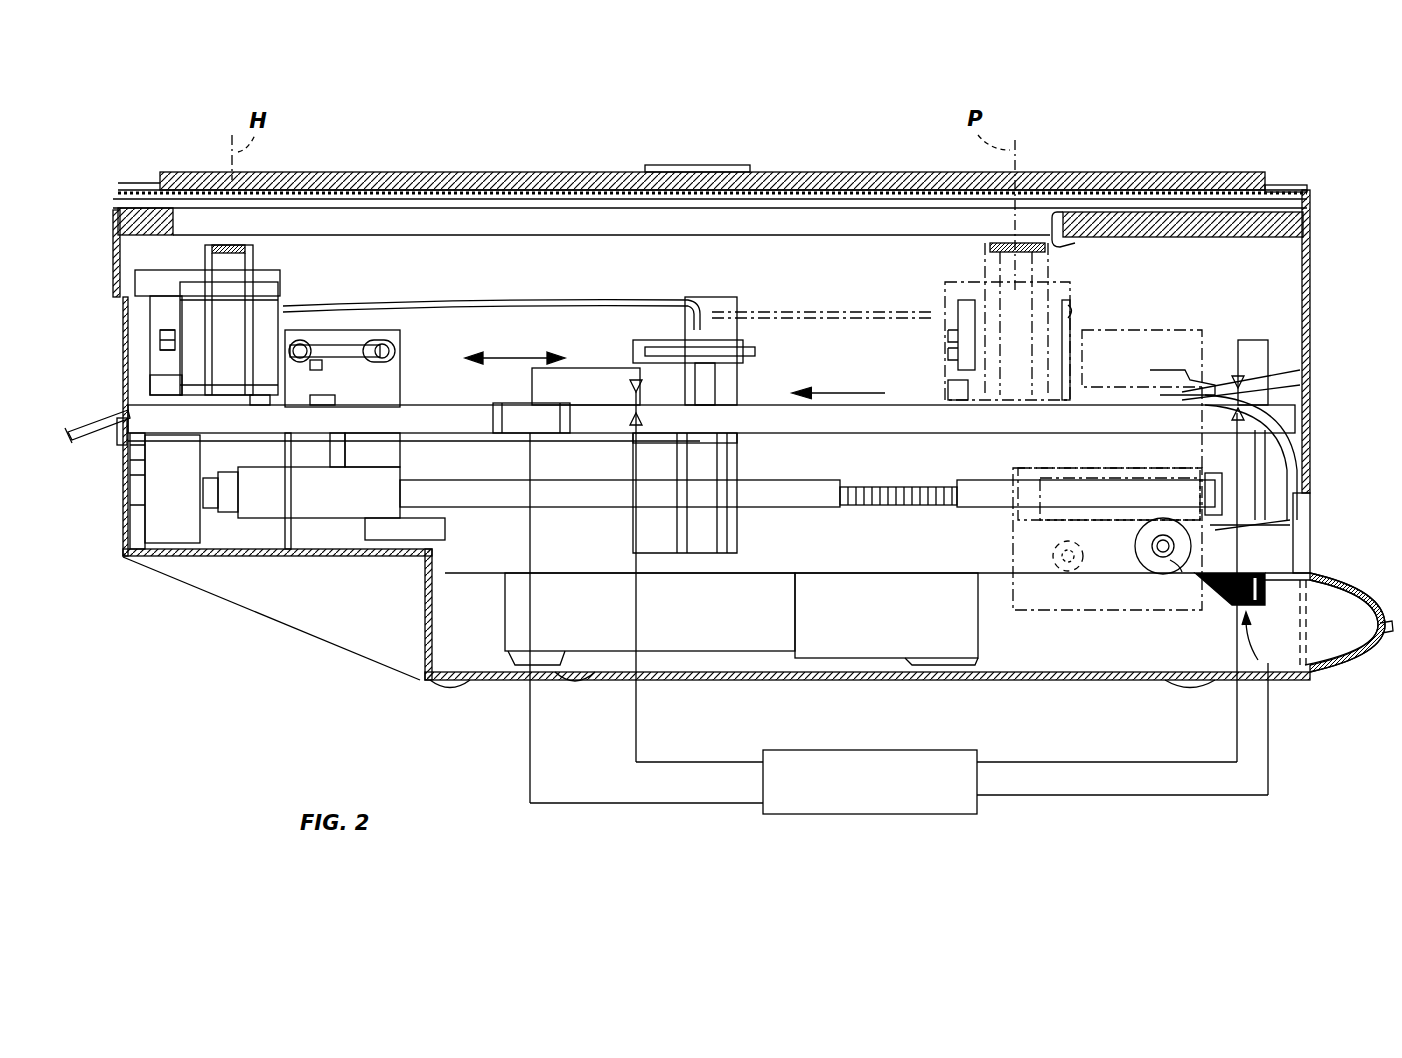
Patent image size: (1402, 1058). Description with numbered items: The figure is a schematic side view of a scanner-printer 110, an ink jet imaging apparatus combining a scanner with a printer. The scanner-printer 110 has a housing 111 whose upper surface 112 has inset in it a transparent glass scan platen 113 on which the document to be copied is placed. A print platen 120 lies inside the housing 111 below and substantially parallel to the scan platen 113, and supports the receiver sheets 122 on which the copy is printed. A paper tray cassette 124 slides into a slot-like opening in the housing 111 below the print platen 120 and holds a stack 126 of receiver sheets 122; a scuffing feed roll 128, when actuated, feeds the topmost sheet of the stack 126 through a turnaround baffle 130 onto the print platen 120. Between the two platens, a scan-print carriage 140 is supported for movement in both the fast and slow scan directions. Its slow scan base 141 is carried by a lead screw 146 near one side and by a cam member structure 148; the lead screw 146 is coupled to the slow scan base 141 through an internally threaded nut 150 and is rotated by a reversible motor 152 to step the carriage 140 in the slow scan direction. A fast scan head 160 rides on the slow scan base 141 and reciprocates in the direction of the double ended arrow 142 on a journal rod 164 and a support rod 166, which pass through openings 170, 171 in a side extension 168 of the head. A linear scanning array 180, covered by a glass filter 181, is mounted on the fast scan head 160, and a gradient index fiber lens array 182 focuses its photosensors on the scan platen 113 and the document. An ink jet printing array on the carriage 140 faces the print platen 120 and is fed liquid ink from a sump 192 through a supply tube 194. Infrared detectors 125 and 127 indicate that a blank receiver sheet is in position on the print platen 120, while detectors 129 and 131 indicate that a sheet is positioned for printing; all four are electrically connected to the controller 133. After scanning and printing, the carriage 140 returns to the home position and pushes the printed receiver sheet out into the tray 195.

The scanner-printer 110 is at (590, 152).
The housing 111 is at (1312, 250).
The upper surface 112 is at (1055, 240).
The scan platen 113 is at (873, 225).
The print platen 120 is at (902, 412).
The receiver sheets 122 is at (1262, 566).
The paper tray cassette 124 is at (1340, 575).
The infrared detector 125 is at (1238, 374).
The stack 126 is at (1270, 678).
The infrared detector 127 is at (1295, 398).
The scuffing feed roll 128 is at (1153, 556).
The infrared detector 129 is at (628, 384).
The turnaround baffle 130 is at (1088, 270).
The infrared detector 131 is at (632, 420).
The controller 133 is at (945, 808).
The scan-print carriage 140 is at (288, 262).
The slow scan base 141 is at (400, 453).
The double ended arrow 142 is at (522, 358).
The lead screw 146 is at (898, 490).
The cam member structure 148 is at (818, 482).
The internally threaded nut 150 is at (325, 510).
The reversible motor 152 is at (177, 507).
The fast scan head 160 is at (276, 293).
The journal rod 164 is at (303, 348).
The support rod 166 is at (390, 353).
The side extension 168 is at (347, 360).
The opening 170 is at (285, 405).
The opening 171 is at (402, 336).
The linear scanning array 180 is at (227, 402).
The glass filter 181 is at (177, 292).
The gradient index fiber lens array 182 is at (212, 270).
The sump 192 is at (740, 385).
The supply tube 194 is at (612, 318).
The tray 195 is at (70, 430).